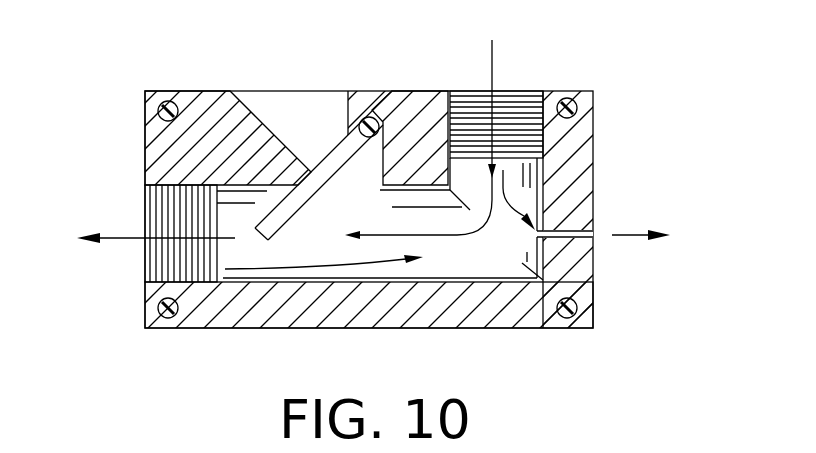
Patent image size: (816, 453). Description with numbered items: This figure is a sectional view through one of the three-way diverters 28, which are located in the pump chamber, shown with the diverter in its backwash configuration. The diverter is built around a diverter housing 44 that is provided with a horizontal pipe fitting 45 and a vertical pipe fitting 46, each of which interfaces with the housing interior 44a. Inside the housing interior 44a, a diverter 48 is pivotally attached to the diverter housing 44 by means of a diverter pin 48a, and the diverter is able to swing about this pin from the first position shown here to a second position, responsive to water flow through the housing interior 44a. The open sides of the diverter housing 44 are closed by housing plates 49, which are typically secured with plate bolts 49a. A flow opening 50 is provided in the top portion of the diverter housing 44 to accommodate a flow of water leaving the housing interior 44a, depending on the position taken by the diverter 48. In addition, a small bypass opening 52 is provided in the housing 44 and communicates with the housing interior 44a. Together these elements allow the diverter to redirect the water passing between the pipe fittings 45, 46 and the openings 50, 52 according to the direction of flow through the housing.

The three-way diverter 28 is at (247, 85).
The diverter housing 44 is at (178, 145).
The housing interior 44a is at (332, 272).
The horizontal pipe fitting 45 is at (173, 258).
The vertical pipe fitting 46 is at (512, 117).
The diverter 48 is at (338, 148).
The diverter pin 48a is at (370, 138).
The housing plate 49 is at (521, 265).
The plate bolt 49a is at (162, 103).
The flow opening 50 is at (290, 112).
The bypass opening 52 is at (593, 228).